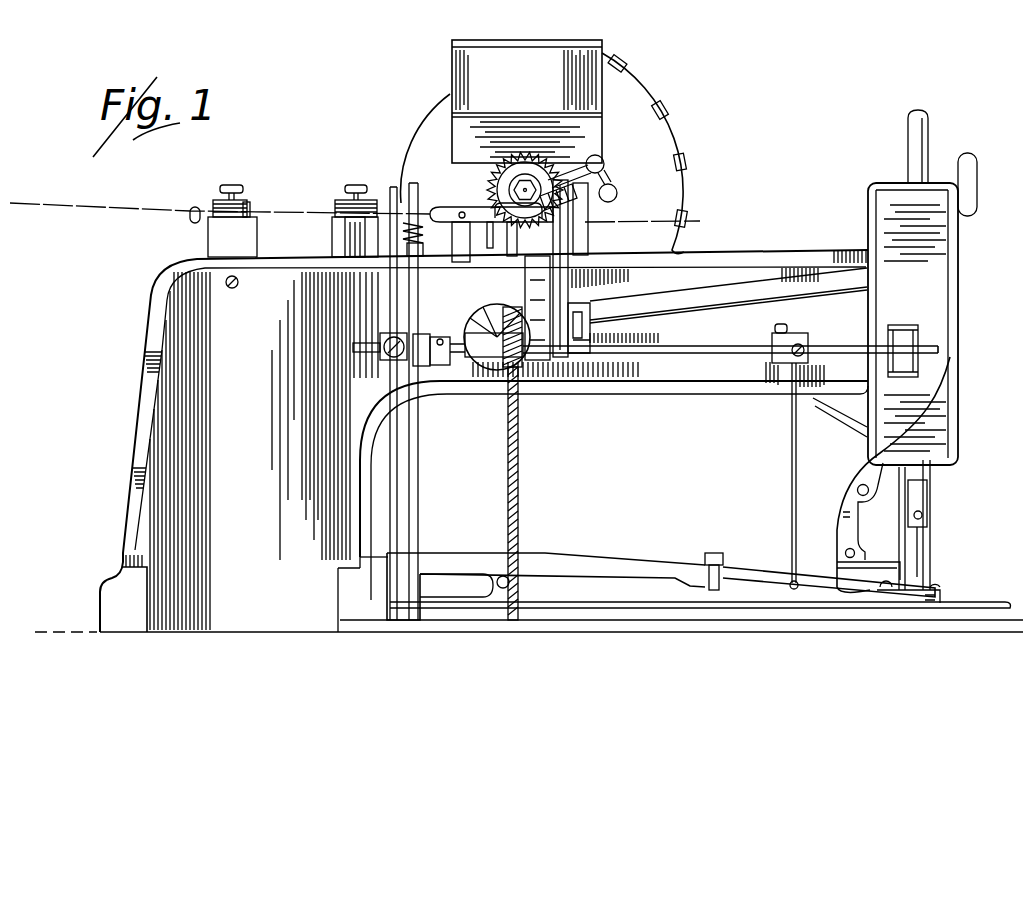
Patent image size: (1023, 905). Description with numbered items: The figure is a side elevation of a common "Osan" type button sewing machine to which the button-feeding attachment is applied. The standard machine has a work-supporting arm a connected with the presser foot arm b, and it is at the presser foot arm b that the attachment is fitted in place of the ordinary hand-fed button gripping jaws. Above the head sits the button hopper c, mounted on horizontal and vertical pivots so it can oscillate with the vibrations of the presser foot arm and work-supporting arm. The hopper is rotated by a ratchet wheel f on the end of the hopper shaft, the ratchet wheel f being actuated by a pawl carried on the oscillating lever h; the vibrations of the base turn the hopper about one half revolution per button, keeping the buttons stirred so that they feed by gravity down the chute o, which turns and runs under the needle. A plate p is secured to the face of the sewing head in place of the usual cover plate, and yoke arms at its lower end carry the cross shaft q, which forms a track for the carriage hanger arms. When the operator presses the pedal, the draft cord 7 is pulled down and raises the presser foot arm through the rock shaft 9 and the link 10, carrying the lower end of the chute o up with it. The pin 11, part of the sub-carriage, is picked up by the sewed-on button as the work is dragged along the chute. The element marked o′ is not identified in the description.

The ratchet wheel f is at (488, 180).
The oscillating lever h is at (553, 172).
The button hopper c is at (633, 172).
The plate p is at (958, 298).
The rock shaft 9 is at (666, 350).
The link 10 is at (790, 427).
The chute o is at (840, 413).
The presser arm o′ is at (933, 567).
The cross shaft q is at (857, 490).
The pin 11 is at (930, 578).
The draft cord 7 is at (518, 490).
The presser foot arm b is at (580, 562).
The work-supporting arm a is at (993, 607).